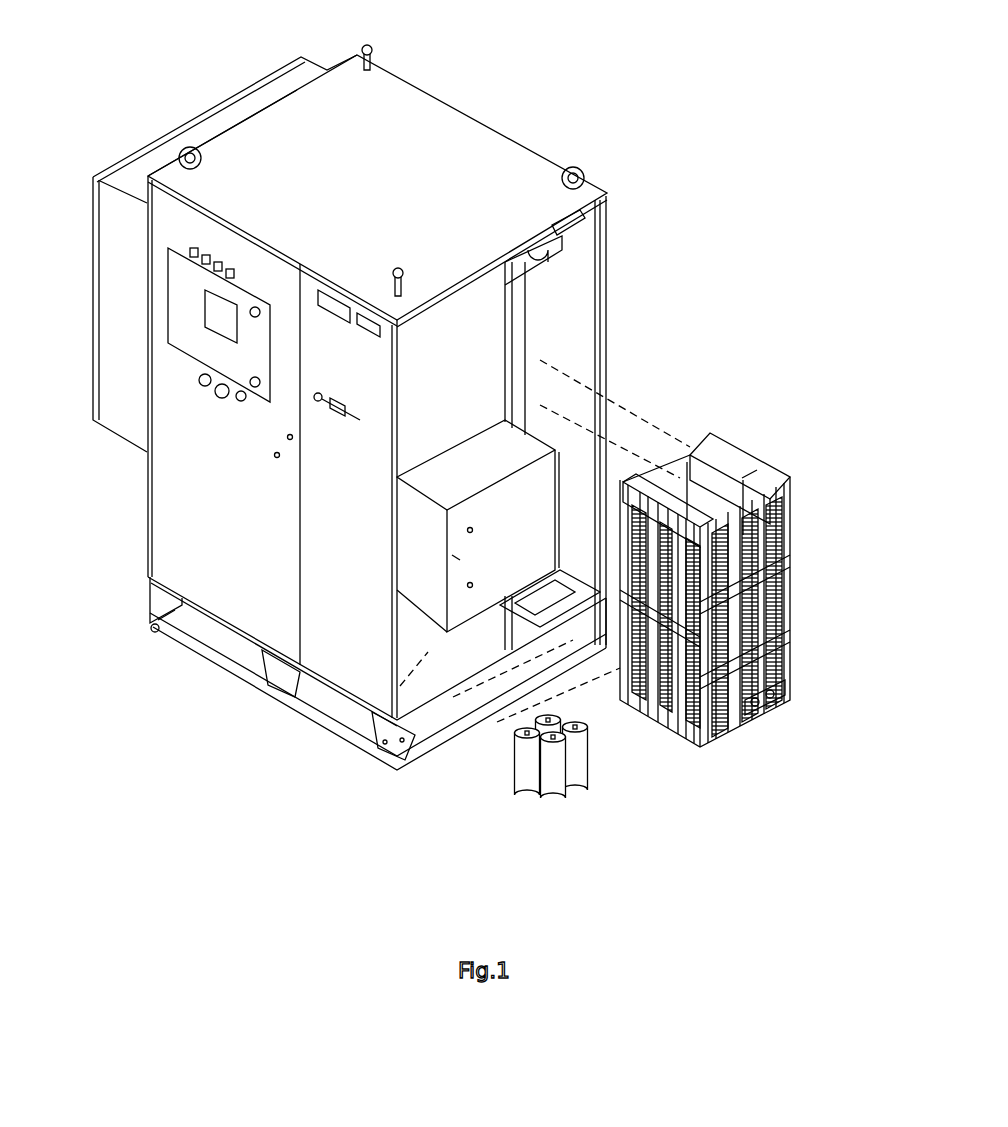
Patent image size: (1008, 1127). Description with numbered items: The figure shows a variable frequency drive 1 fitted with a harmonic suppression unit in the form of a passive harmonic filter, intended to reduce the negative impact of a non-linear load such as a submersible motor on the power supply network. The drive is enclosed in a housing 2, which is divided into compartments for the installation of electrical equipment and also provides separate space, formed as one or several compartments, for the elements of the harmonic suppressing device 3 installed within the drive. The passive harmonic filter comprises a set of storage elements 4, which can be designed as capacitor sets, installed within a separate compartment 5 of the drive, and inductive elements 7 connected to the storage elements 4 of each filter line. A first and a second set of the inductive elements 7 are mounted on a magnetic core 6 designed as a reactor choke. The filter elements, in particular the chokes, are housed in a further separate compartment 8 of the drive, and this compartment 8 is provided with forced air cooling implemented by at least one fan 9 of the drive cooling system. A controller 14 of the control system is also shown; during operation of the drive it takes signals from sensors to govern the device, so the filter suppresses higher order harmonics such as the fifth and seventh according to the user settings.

The variable frequency drive 1 is at (525, 125).
The housing 2 is at (180, 560).
The harmonic suppressing device 3 is at (762, 573).
The storage elements 4 is at (520, 778).
The separate compartment 5 is at (393, 707).
The magnetic core 6 is at (770, 707).
The inductive elements 7 is at (777, 520).
The separate compartment 8 is at (578, 314).
The fan 9 is at (565, 207).
The controller 14 is at (190, 322).